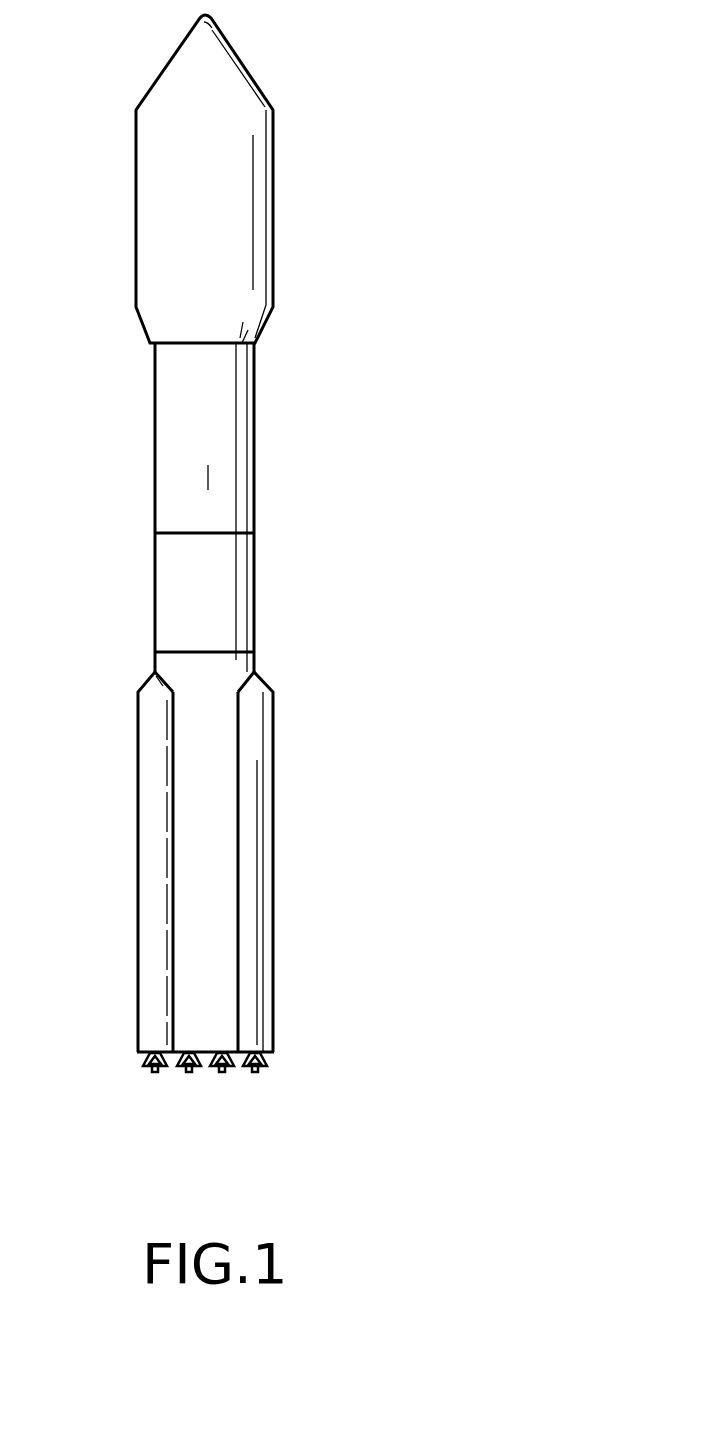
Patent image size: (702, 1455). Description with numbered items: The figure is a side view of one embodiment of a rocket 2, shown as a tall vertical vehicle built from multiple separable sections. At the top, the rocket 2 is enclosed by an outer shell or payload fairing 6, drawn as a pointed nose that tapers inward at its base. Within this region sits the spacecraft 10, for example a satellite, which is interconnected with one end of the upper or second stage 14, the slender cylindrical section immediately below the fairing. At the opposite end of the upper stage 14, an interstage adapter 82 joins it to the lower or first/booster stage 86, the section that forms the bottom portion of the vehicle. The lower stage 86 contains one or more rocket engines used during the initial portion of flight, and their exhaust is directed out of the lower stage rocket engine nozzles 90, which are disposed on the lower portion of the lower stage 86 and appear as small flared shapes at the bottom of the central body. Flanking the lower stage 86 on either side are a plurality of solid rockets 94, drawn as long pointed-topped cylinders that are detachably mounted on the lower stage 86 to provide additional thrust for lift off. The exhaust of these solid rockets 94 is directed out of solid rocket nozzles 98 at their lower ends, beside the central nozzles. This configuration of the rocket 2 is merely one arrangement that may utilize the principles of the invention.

The rocket 2 is at (478, 432).
The payload fairing 6 is at (180, 190).
The spacecraft 10 is at (275, 185).
The upper stage 14 is at (257, 378).
The interstage adapter 82 is at (256, 592).
The lower stage 86 is at (256, 668).
The lower stage rocket engine nozzles 90 is at (222, 1072).
The solid rockets 94 is at (148, 838).
The solid rocket nozzles 98 is at (155, 1072).